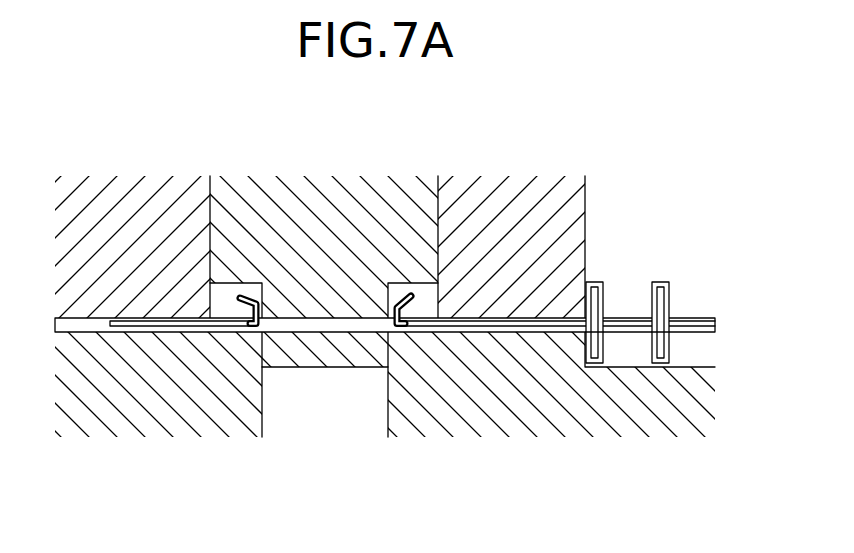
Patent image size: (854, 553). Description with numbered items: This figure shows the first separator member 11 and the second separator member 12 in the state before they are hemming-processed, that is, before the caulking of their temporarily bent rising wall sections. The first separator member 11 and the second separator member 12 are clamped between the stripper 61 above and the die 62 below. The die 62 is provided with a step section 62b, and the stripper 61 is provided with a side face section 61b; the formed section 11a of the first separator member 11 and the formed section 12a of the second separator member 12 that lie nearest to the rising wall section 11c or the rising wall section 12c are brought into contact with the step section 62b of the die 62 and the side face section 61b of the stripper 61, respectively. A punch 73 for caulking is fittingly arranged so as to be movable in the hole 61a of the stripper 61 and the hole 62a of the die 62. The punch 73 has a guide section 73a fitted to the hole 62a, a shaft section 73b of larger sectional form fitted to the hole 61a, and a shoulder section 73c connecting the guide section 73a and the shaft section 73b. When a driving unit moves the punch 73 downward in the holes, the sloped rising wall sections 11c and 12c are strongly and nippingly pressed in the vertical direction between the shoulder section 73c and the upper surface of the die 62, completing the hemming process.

The first separator member 11 is at (688, 333).
The formed section 11a is at (665, 366).
The rising wall section 11c is at (258, 325).
The second separator member 12 is at (690, 318).
The formed section 12a is at (660, 283).
The rising wall section 12c is at (405, 325).
The stripper 61 is at (496, 194).
The hole 61a is at (210, 286).
The side face section 61b is at (587, 210).
The die 62 is at (537, 420).
The hole 62a is at (260, 428).
The step section 62b is at (590, 370).
The punch 73 is at (340, 312).
The guide section 73a is at (298, 360).
The shaft section 73b is at (270, 192).
The shoulder section 73c is at (430, 288).